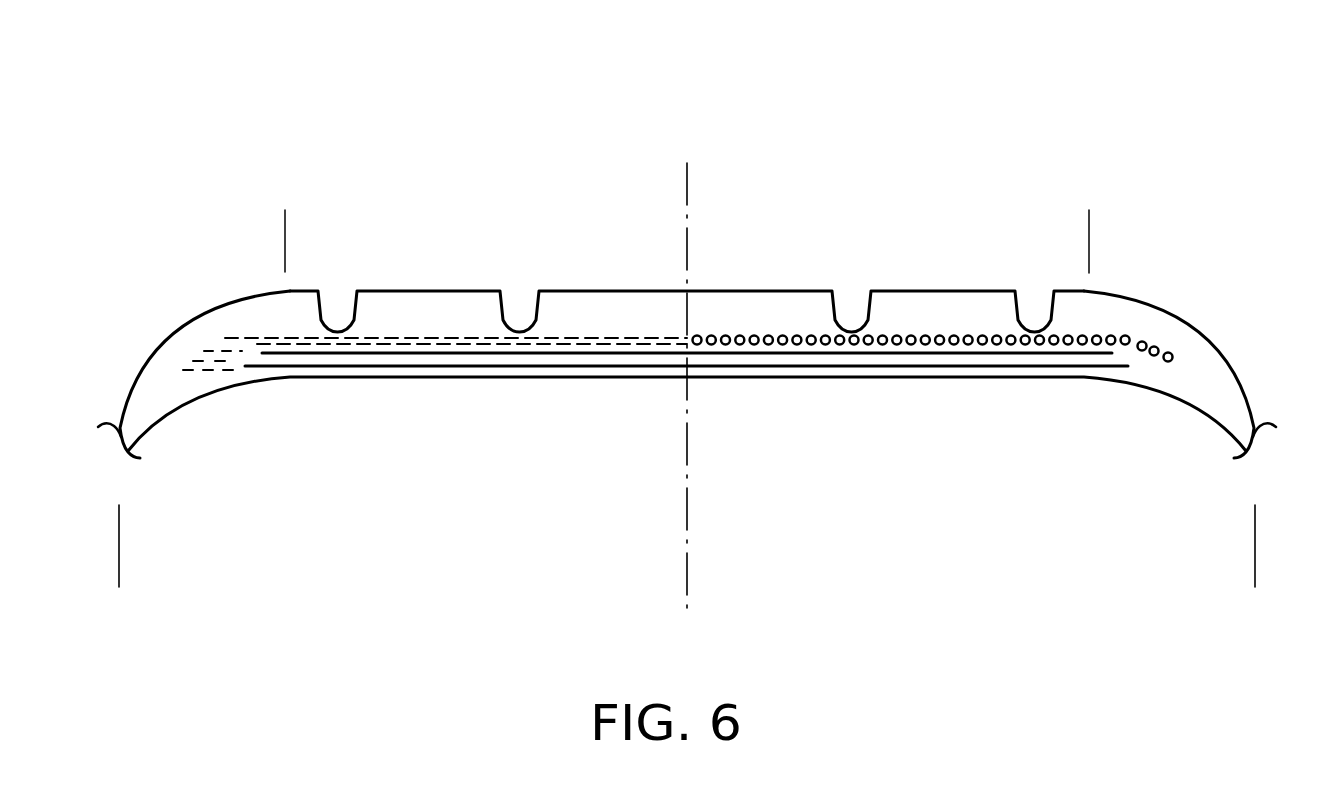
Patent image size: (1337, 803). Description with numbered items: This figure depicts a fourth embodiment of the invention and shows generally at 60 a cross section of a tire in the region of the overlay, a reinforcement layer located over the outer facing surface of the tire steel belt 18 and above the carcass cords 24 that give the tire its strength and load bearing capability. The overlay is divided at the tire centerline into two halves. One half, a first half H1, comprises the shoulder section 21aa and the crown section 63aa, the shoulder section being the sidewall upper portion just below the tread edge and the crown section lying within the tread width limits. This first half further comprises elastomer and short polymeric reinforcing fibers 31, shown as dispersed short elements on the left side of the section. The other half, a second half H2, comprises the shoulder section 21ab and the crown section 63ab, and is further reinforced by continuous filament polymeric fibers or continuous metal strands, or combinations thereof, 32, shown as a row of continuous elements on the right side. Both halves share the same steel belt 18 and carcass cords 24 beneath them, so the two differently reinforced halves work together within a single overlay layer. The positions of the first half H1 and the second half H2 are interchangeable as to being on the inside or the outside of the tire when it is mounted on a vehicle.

The tire cross section 60 is at (797, 91).
The crown section 63aa is at (687, 210).
The crown section 63ab is at (1089, 210).
The shoulder section 21aa is at (286, 212).
The shoulder section 21ab is at (1088, 212).
The short polymeric reinforcing fibers 31 is at (248, 337).
The continuous filament polymeric fibers or continuous metal strands 32 is at (799, 336).
The steel belt 18 is at (529, 356).
The carcass cords 24 is at (643, 378).
The first half H1 is at (687, 572).
The second half H2 is at (687, 572).